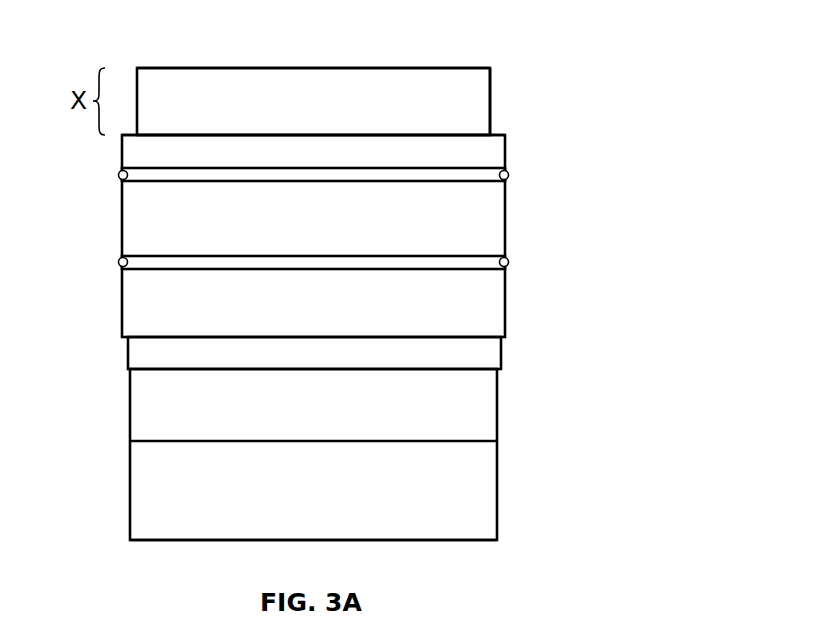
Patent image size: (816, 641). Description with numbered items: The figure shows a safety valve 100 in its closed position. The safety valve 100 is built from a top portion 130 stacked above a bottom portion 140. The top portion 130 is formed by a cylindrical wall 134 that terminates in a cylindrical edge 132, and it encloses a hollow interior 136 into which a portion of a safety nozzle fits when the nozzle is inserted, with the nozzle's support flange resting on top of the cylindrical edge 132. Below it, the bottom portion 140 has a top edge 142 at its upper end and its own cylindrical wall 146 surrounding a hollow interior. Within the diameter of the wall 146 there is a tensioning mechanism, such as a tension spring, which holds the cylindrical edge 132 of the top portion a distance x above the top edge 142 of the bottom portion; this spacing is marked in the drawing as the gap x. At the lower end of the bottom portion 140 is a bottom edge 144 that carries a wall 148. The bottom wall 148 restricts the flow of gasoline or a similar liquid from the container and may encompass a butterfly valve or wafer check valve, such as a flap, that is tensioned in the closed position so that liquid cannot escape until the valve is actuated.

The safety valve 100 is at (612, 69).
The top portion 130 is at (490, 113).
The cylindrical edge 132 is at (490, 70).
The cylindrical wall 134 is at (173, 98).
The hollow interior 136 is at (312, 68).
The bottom portion 140 is at (505, 302).
The top edge 142 is at (122, 135).
The bottom edge 144 is at (487, 493).
The cylindrical wall 146 is at (152, 314).
The bottom wall 148 is at (475, 540).